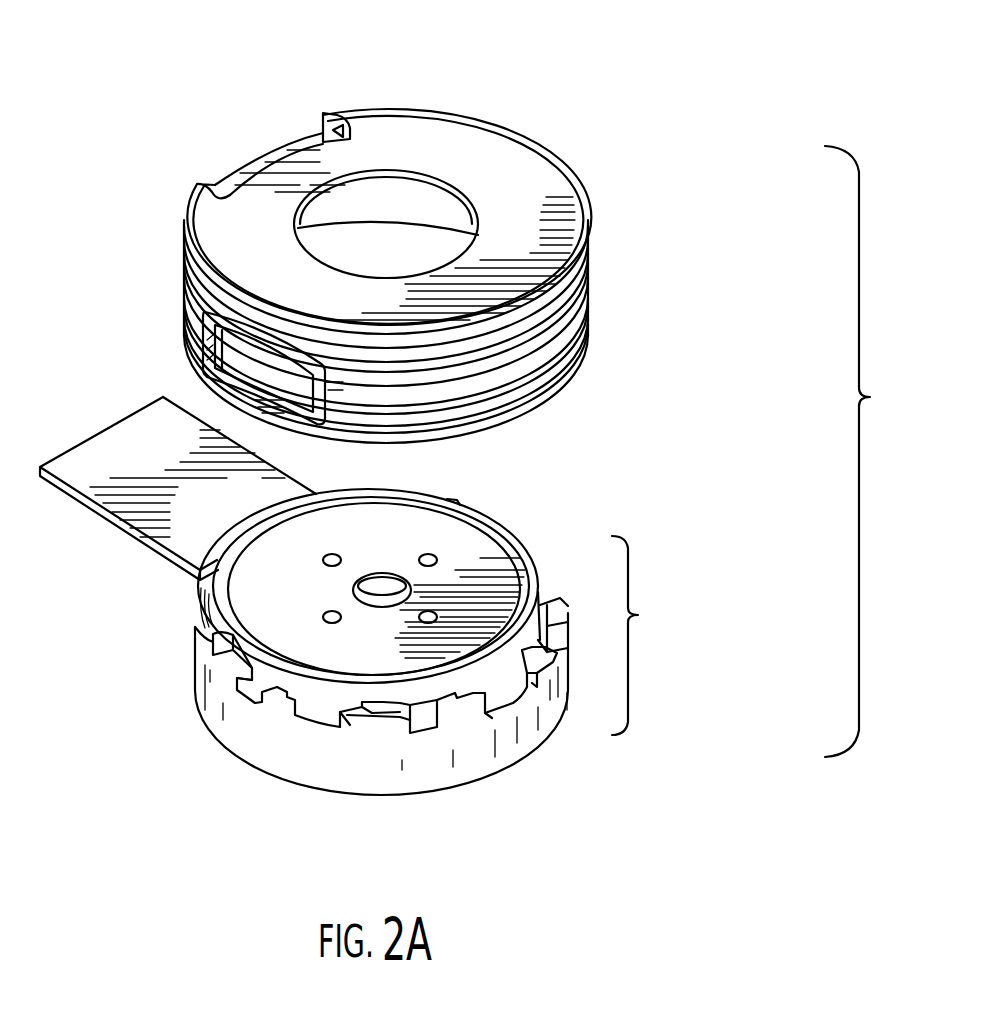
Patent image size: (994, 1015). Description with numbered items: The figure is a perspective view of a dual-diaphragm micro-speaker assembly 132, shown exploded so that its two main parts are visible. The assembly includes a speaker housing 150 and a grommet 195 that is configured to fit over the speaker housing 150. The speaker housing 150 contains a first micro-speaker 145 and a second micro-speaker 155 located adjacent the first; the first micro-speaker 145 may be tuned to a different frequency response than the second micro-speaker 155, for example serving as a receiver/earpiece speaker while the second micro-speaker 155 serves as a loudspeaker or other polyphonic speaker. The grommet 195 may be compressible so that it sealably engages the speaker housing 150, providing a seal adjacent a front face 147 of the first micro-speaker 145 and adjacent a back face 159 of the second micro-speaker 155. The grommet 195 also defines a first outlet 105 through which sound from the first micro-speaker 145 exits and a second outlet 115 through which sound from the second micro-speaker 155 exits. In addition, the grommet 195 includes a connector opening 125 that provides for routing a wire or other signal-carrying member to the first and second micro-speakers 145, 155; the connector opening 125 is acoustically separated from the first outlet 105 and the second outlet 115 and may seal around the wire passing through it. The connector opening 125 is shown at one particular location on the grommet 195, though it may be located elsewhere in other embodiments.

The first outlet 105 is at (403, 199).
The second outlet 115 is at (235, 357).
The connector opening 125 is at (277, 140).
The dual-diaphragm micro-speaker assembly 132 is at (876, 451).
The first micro-speaker 145 is at (276, 596).
The front face 147 is at (498, 517).
The speaker housing 150 is at (658, 635).
The second micro-speaker 155 is at (320, 768).
The back face 159 is at (500, 685).
The grommet 195 is at (584, 207).